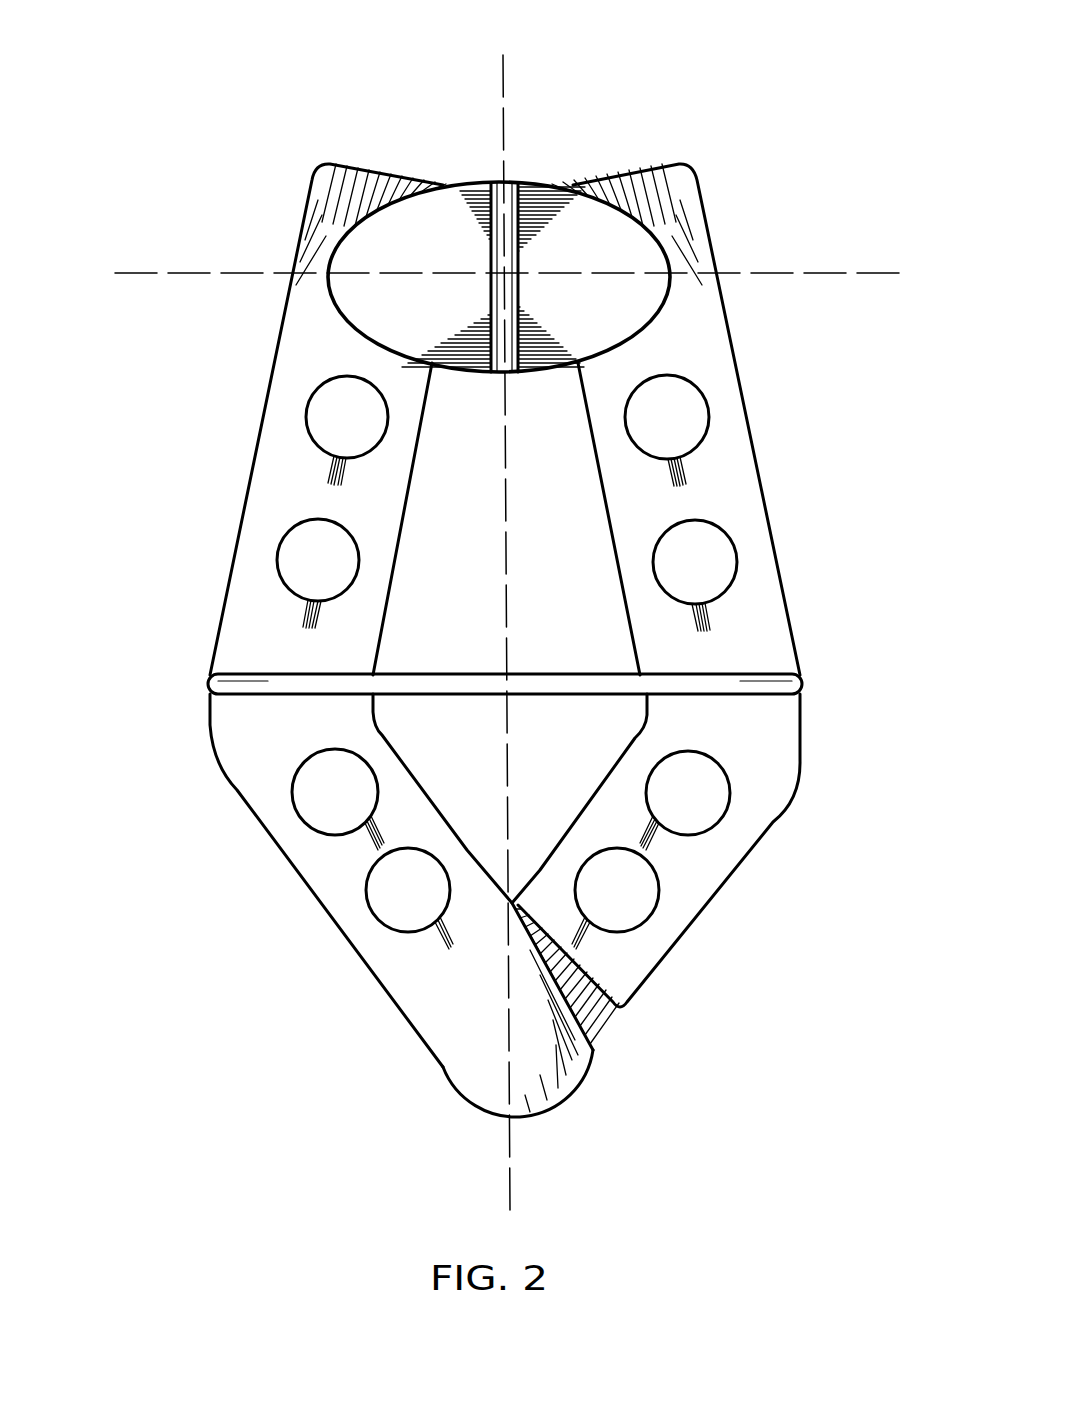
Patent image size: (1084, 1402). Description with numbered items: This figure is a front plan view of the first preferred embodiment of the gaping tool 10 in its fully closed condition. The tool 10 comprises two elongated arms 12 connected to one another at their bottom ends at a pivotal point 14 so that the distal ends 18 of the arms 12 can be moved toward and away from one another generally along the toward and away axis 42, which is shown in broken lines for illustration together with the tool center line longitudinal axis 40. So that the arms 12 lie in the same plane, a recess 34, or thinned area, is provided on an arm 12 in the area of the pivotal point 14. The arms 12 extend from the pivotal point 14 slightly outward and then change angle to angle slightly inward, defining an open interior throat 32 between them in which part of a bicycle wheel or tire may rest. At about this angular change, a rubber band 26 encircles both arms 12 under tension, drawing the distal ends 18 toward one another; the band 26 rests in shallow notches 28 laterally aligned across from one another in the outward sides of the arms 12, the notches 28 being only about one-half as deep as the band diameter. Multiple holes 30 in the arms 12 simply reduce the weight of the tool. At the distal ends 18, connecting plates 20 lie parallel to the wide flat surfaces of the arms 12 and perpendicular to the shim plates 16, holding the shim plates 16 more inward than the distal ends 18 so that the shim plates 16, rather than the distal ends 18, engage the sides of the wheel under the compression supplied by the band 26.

The gaping tool 10 is at (185, 128).
The elongated arms 12 is at (235, 790).
The pivotal point 14 is at (520, 1038).
The shim plates 16 is at (490, 182).
The distal ends 18 is at (352, 165).
The connecting plate 20 is at (353, 252).
The rubber band 26 is at (733, 697).
The notches 28 is at (218, 673).
The holes 30 is at (703, 547).
The open interior throat 32 is at (460, 428).
The recess 34 is at (617, 1023).
The longitudinal axis 40 is at (508, 1183).
The toward and away axis 42 is at (162, 273).